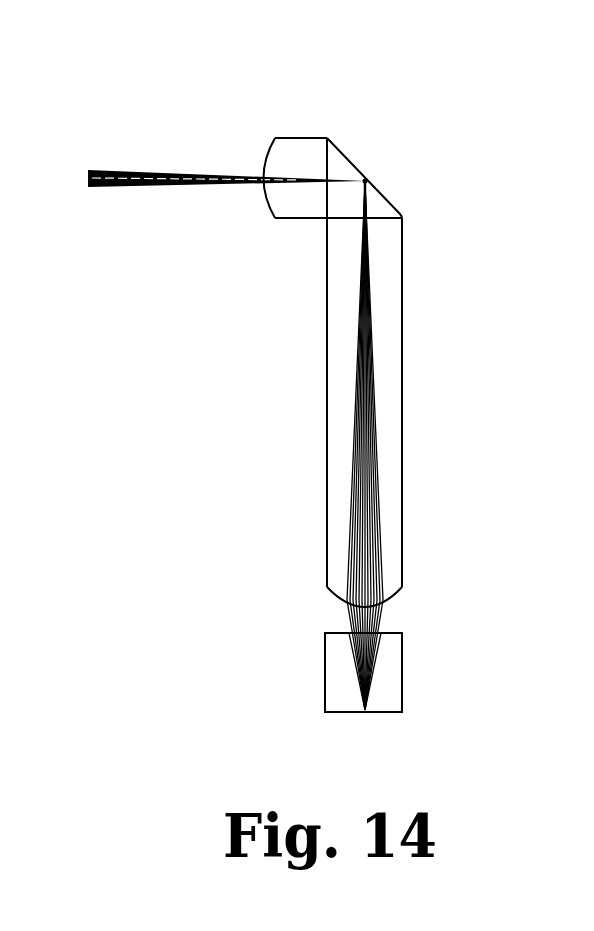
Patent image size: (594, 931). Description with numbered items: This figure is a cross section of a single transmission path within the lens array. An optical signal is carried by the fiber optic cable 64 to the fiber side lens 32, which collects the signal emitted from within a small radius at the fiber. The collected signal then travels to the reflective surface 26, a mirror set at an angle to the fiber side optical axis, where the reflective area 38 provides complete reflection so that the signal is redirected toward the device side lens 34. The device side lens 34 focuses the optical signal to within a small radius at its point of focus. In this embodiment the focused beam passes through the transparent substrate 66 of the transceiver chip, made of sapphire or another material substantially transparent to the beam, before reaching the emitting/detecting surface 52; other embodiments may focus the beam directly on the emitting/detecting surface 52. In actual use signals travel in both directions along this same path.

The fiber optic cable 64 is at (140, 172).
The device side lens 34 is at (267, 152).
The reflective surface 26 is at (347, 160).
The reflective area 38 is at (368, 182).
The fiber side lens 32 is at (402, 378).
The transparent substrate 66 is at (397, 642).
The emitting/detecting surface 52 is at (395, 697).